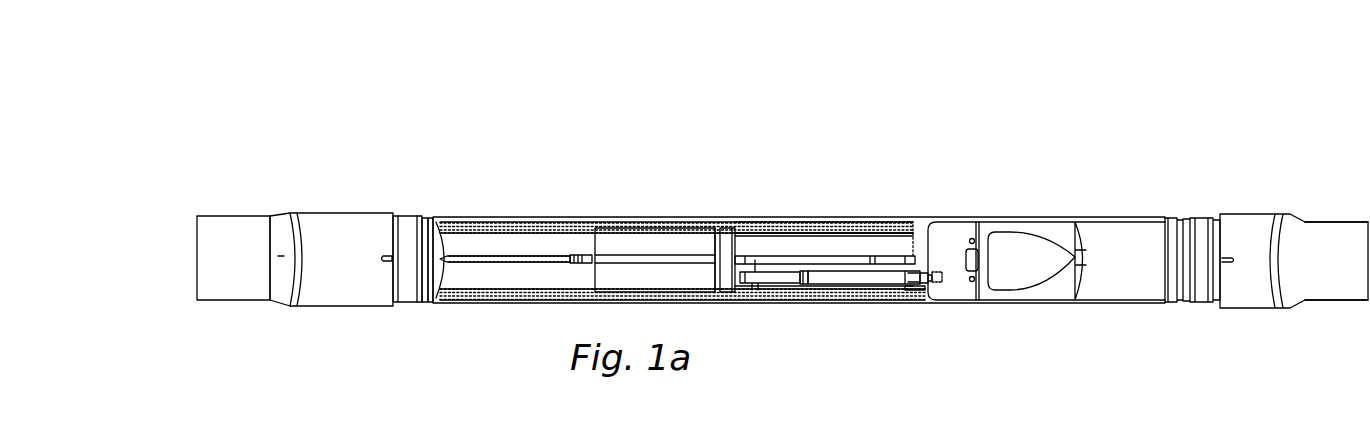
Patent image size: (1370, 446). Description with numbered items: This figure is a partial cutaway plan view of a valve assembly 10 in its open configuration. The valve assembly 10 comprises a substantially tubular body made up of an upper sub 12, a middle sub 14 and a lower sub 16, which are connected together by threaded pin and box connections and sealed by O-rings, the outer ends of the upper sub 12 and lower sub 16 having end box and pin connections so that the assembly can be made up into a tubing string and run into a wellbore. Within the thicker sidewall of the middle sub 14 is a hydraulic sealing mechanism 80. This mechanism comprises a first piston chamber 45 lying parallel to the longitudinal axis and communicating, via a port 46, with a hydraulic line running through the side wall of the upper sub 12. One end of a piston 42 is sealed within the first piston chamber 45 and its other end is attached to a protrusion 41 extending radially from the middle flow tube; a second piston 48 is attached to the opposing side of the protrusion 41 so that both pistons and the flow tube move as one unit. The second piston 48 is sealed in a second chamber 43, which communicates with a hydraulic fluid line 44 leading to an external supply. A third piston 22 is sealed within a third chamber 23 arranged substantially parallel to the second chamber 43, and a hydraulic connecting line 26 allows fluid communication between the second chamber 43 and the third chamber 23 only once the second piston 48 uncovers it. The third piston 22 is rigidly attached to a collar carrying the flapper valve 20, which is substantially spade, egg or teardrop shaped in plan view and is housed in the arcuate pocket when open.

The valve assembly 10 is at (819, 213).
The upper sub 12 is at (320, 232).
The middle sub 14 is at (588, 220).
The lower sub 16 is at (1250, 222).
The flapper valve 20 is at (1030, 250).
The third piston 22 is at (888, 280).
The third chamber 23 is at (785, 280).
The hydraulic connecting line 26 is at (755, 262).
The protrusion 41 is at (727, 250).
The piston 42 is at (642, 258).
The second chamber 43 is at (915, 262).
The hydraulic fluid line 44 is at (900, 230).
The first piston chamber 45 is at (482, 255).
The port 46 is at (438, 252).
The second piston 48 is at (857, 255).
The hydraulic sealing mechanism 80 is at (832, 215).